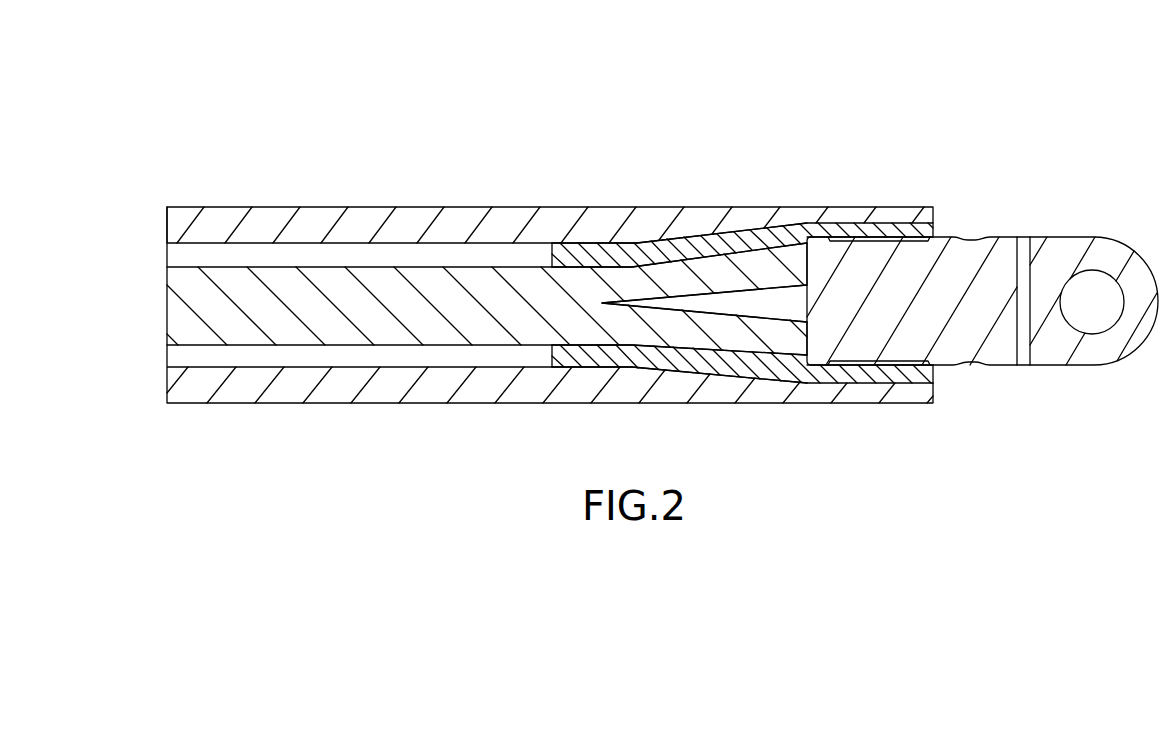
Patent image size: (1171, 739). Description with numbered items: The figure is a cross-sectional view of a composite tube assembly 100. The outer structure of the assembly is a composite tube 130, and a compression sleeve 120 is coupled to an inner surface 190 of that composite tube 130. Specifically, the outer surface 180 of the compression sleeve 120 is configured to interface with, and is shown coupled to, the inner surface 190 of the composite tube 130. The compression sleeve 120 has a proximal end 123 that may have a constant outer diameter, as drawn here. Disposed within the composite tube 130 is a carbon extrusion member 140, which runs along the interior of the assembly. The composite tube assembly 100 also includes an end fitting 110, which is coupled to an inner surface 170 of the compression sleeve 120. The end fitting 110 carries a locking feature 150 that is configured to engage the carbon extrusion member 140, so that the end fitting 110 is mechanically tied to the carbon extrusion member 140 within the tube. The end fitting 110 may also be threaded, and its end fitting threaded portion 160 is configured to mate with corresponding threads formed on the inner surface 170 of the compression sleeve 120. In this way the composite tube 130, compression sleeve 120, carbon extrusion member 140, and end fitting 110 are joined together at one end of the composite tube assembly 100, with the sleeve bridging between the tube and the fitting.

The composite tube assembly 100 is at (834, 96).
The end fitting 110 is at (1065, 248).
The compression sleeve 120 is at (640, 245).
The proximal end 123 is at (551, 250).
The composite tube 130 is at (346, 225).
The carbon extrusion member 140 is at (183, 312).
The locking feature 150 is at (762, 290).
The end fitting threaded portion 160 is at (880, 240).
The inner surface 170 is at (851, 239).
The outer surface 180 is at (920, 379).
The inner surface 190 is at (895, 385).